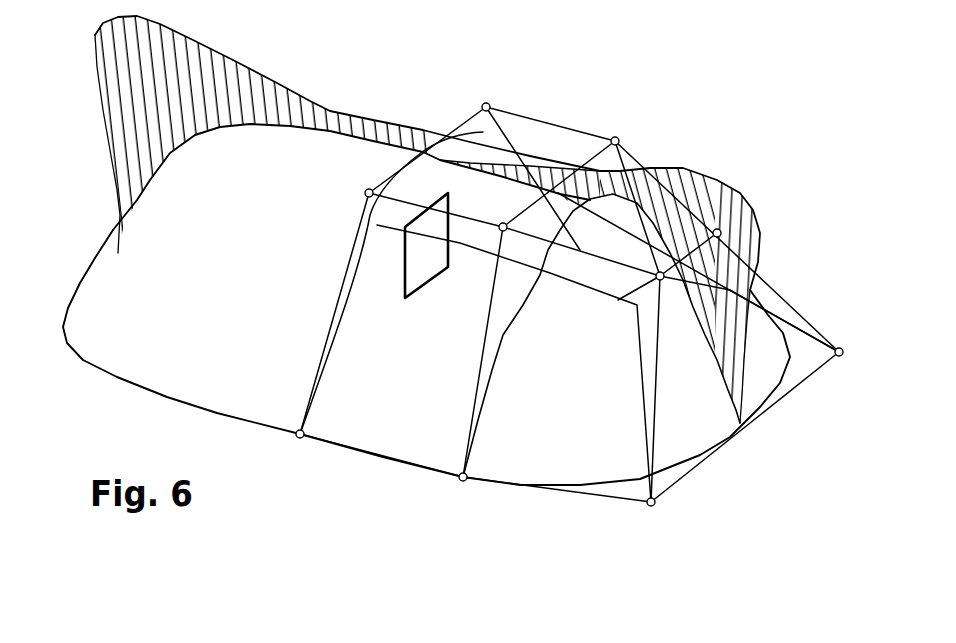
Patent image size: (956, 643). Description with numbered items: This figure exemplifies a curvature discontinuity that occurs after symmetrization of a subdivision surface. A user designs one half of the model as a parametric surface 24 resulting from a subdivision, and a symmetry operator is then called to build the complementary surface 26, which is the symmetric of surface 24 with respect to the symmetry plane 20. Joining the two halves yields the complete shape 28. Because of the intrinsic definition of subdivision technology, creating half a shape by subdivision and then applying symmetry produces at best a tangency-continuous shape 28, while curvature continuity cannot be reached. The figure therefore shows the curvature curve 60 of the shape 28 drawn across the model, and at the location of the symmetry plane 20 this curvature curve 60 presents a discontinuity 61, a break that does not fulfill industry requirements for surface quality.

The symmetry plane 20 is at (435, 281).
The parametric surface 24 is at (558, 348).
The complementary surface 26 is at (351, 279).
The shape 28 is at (326, 477).
The curvature curve 60 is at (223, 93).
The discontinuity 61 is at (436, 141).